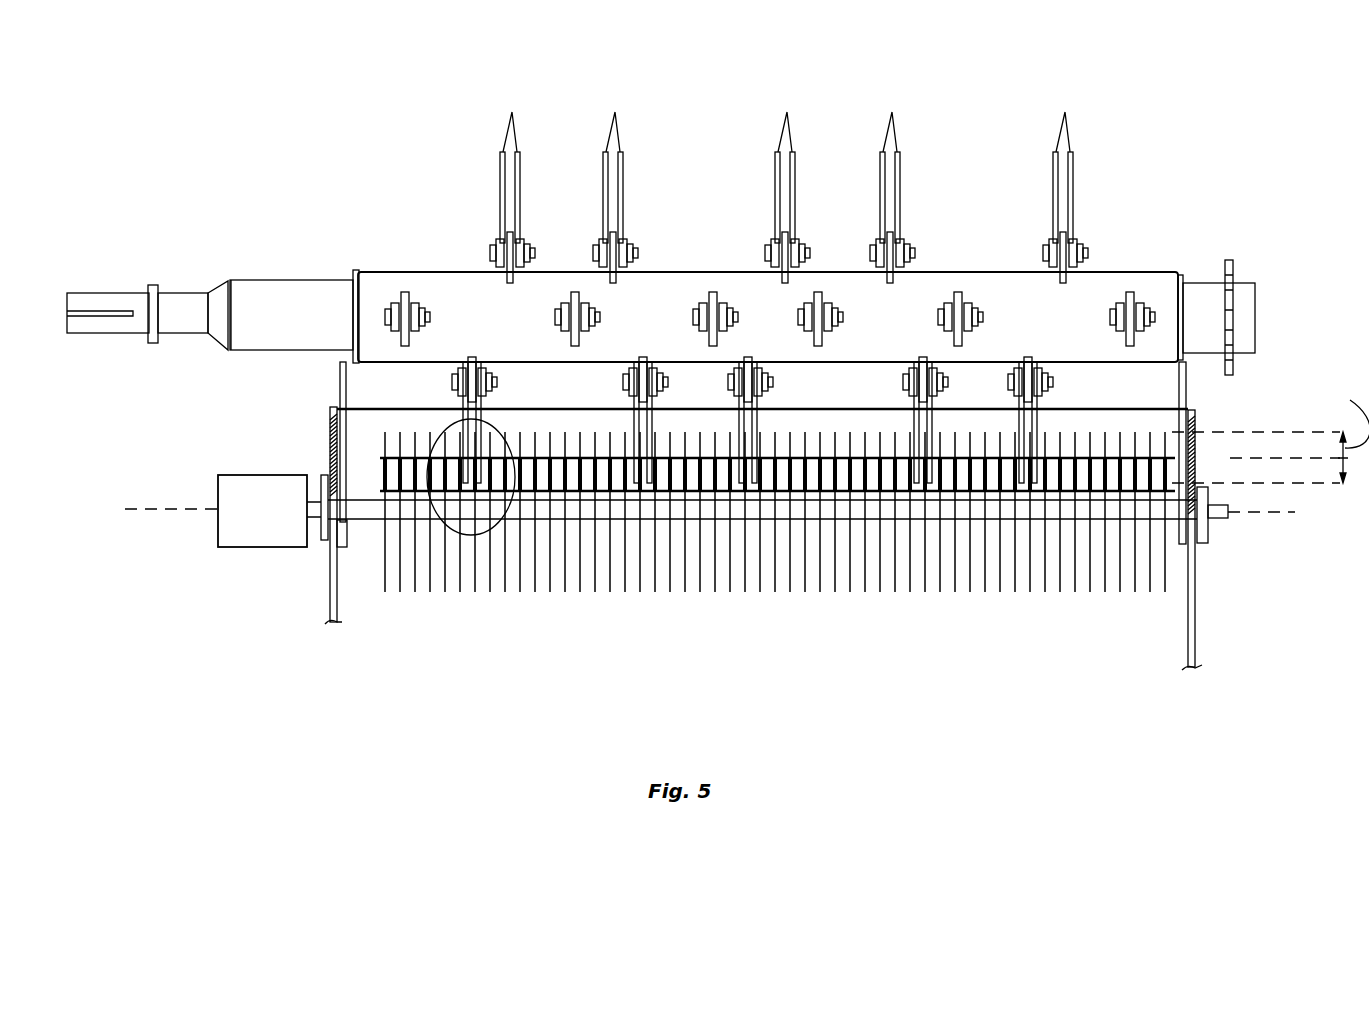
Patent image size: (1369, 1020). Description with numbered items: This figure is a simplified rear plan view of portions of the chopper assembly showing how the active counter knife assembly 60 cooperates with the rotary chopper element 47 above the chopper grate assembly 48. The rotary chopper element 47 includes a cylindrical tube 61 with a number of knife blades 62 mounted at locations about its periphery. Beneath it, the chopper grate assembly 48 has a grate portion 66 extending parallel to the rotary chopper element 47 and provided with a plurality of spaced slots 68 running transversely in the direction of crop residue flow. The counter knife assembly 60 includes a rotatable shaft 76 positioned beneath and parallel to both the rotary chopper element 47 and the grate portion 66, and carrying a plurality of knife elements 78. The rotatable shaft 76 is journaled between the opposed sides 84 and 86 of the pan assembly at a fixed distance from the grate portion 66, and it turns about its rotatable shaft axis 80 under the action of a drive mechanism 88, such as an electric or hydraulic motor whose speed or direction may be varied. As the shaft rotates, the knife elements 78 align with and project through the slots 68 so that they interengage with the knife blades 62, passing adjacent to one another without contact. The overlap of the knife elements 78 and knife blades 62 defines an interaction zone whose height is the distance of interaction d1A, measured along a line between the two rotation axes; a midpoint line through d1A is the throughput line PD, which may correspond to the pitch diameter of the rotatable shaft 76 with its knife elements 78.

The rotary chopper element 47 is at (392, 270).
The chopper grate assembly 48 is at (1196, 632).
The active counter knife assembly 60 is at (192, 409).
The cylindrical tube 61 is at (440, 287).
The knife blades 62 is at (1085, 392).
The grate portion 66 is at (1198, 418).
The slots 68 is at (380, 475).
The rotatable shaft 76 is at (372, 520).
The knife elements 78 is at (520, 574).
The rotatable shaft axis 80 is at (150, 509).
The opposed side 84 is at (1195, 588).
The opposed side 86 is at (330, 607).
The drive mechanism 88 is at (232, 548).
The distance of interaction d1A is at (1270, 428).
The throughput line PD is at (1283, 458).